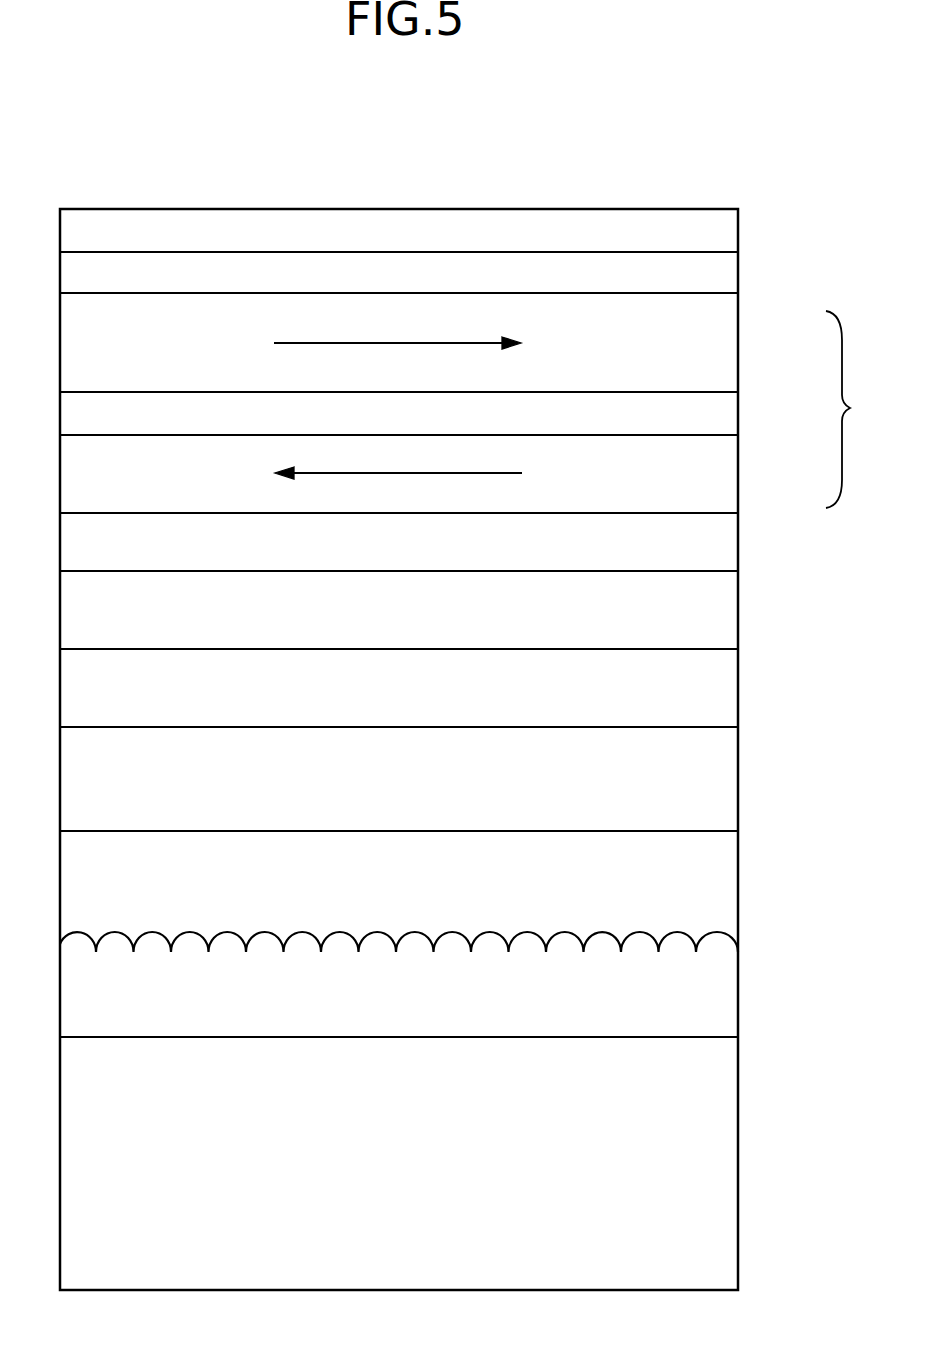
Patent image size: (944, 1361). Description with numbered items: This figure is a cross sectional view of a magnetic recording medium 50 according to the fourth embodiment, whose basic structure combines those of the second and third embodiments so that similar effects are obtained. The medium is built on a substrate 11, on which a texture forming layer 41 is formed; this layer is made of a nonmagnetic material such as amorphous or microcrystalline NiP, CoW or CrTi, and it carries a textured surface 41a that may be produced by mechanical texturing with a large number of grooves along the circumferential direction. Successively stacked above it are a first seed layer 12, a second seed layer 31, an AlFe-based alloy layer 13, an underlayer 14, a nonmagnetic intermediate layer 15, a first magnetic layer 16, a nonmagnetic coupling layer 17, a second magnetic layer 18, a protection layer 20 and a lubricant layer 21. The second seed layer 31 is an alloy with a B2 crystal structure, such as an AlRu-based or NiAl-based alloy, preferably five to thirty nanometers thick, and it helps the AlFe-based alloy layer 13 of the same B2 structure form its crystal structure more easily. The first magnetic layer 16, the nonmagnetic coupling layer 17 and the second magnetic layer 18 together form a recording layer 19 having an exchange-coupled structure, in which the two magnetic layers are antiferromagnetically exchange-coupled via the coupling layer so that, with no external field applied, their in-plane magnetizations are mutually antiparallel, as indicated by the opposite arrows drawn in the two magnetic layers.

The magnetic recording medium 50 is at (78, 151).
The lubricant layer 21 is at (738, 236).
The protection layer 20 is at (738, 276).
The second magnetic layer 18 is at (738, 346).
The nonmagnetic coupling layer 17 is at (738, 416).
The first magnetic layer 16 is at (738, 478).
The recording layer 19 is at (858, 409).
The nonmagnetic intermediate layer 15 is at (738, 546).
The underlayer 14 is at (738, 613).
The AlFe-based alloy layer 13 is at (738, 691).
The second seed layer 31 is at (738, 791).
The first seed layer 12 is at (738, 890).
The textured surface 41a is at (640, 932).
The texture forming layer 41 is at (738, 1006).
The substrate 11 is at (738, 1175).